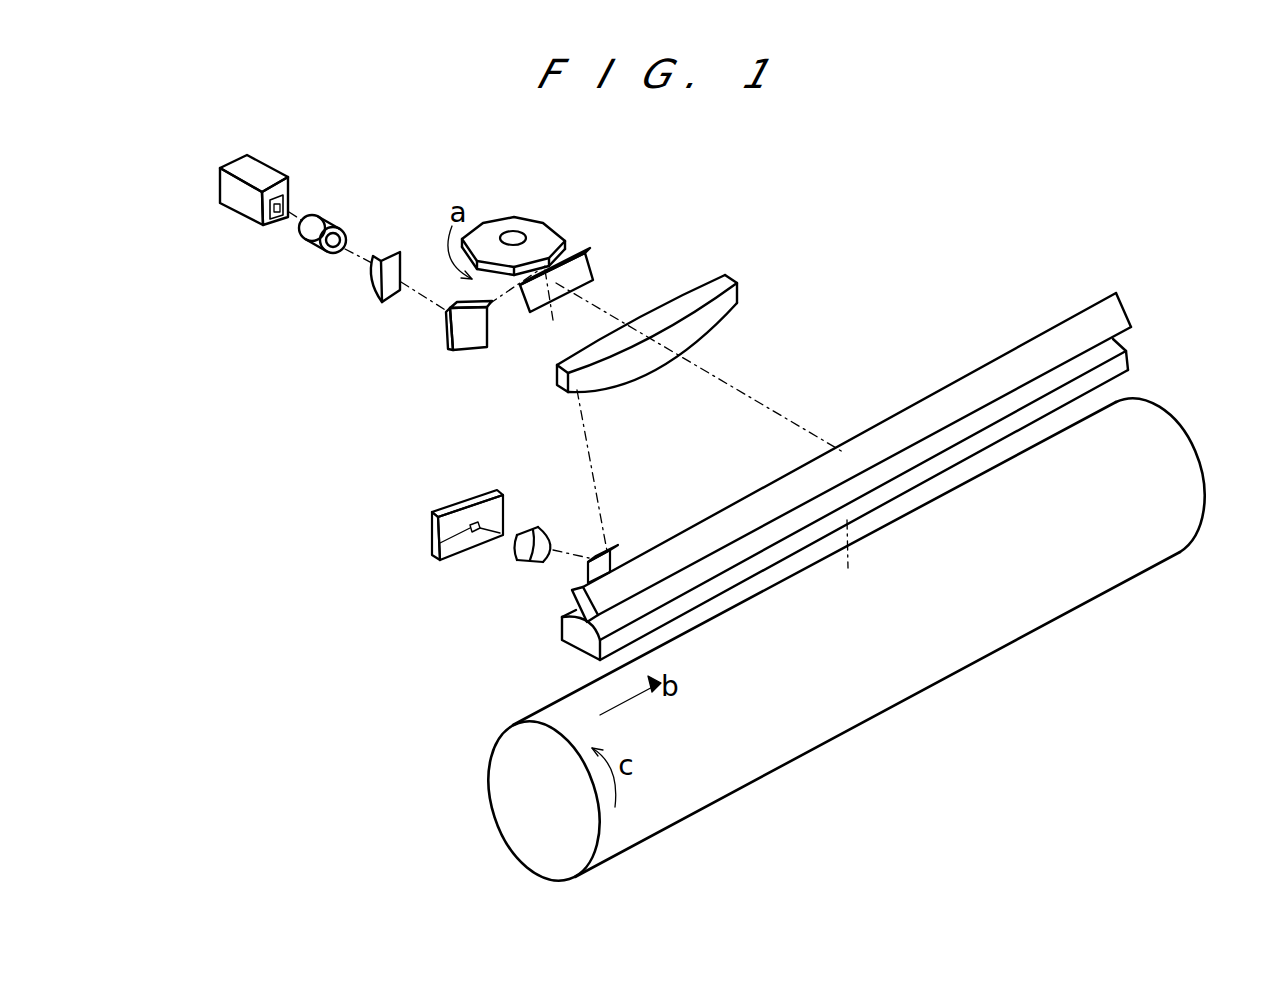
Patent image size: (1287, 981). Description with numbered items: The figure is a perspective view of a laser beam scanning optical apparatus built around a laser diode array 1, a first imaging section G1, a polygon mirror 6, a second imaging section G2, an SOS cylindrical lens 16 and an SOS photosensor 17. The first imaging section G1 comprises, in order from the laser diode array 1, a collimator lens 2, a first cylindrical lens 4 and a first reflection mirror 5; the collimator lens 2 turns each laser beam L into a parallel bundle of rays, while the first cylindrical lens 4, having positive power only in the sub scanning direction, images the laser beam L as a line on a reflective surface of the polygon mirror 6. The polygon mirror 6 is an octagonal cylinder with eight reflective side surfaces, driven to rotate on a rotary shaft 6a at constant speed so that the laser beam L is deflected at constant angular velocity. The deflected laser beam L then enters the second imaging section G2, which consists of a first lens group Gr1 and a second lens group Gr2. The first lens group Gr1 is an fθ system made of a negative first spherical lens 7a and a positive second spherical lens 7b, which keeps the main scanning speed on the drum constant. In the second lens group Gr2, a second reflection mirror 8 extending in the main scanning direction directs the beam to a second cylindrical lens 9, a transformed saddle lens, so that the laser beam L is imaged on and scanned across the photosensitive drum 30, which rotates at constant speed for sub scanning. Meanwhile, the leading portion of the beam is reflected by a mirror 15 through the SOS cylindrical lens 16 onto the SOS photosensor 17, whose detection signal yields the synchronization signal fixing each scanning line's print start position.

The laser diode array 1 is at (279, 187).
The collimator lens 2 is at (310, 250).
The first cylindrical lens 4 is at (373, 293).
The first reflection mirror 5 is at (452, 350).
The polygon mirror 6 is at (517, 206).
The rotary shaft 6a is at (512, 236).
The first spherical lens 7a is at (587, 248).
The second spherical lens 7b is at (722, 273).
The second reflection mirror 8 is at (1093, 317).
The second cylindrical lens 9 is at (1128, 342).
The mirror 15 is at (605, 550).
The SOS cylindrical lens 16 is at (508, 567).
The SOS photosensor 17 is at (438, 542).
The photosensitive drum 30 is at (1163, 413).
The laser beam L is at (737, 388).
The first imaging section G1 is at (258, 323).
The second imaging section G2 is at (1190, 206).
The first lens group Gr1 is at (813, 236).
The second lens group Gr2 is at (1088, 240).